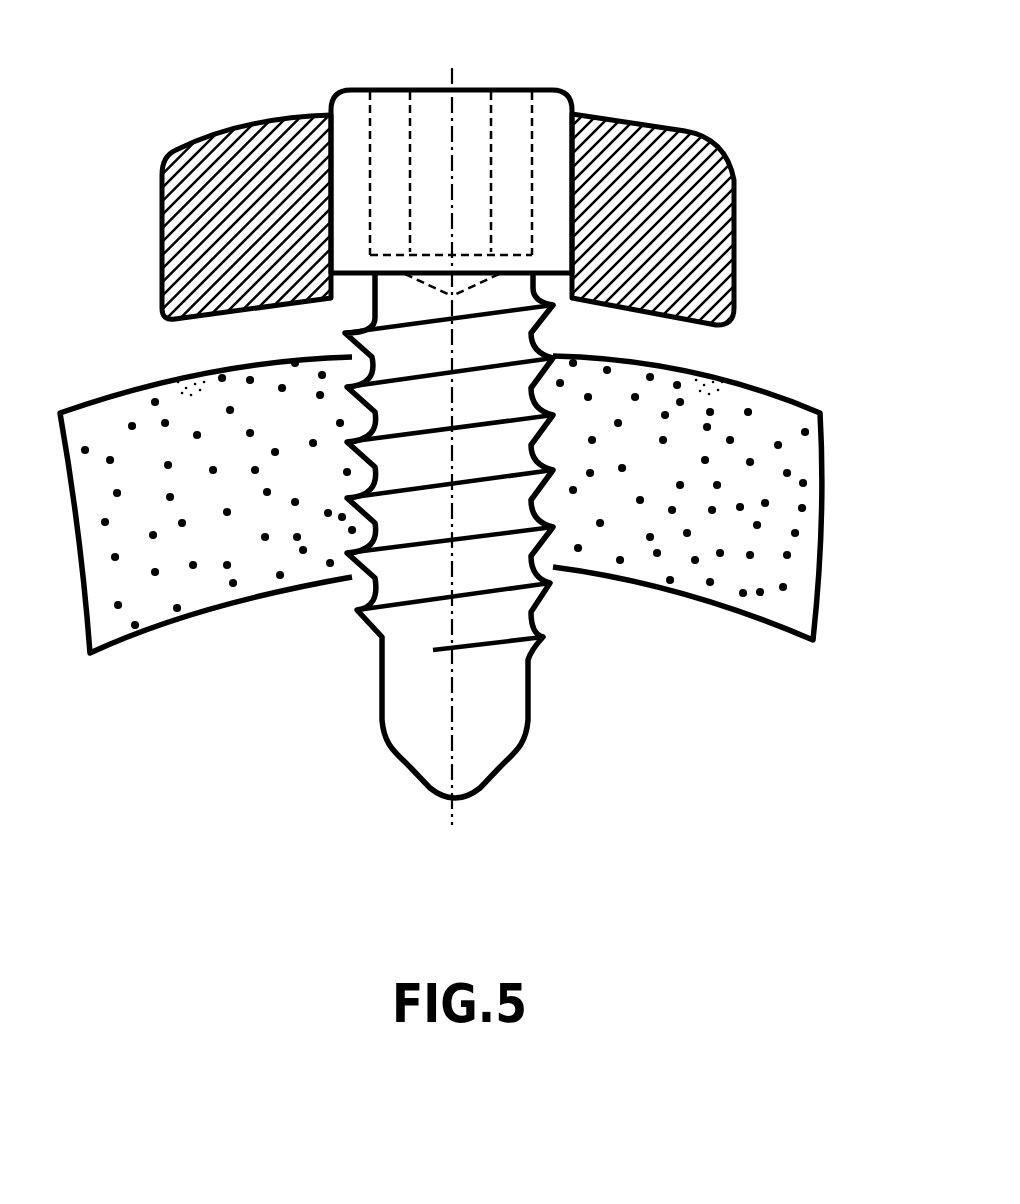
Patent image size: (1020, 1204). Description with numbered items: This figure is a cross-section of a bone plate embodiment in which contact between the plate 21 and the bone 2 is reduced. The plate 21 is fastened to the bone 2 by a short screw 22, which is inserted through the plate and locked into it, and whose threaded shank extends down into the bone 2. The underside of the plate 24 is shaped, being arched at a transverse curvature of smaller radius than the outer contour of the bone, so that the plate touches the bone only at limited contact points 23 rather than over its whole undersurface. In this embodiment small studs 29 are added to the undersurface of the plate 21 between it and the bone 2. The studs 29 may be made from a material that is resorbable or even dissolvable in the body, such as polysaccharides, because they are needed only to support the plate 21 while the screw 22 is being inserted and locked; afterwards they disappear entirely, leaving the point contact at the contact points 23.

The plate 21 is at (632, 136).
The screw 22 is at (413, 625).
The contact points 23 is at (770, 407).
The underside of the plate 24 is at (270, 313).
The studs 29 is at (743, 350).
The bone 2 is at (133, 443).